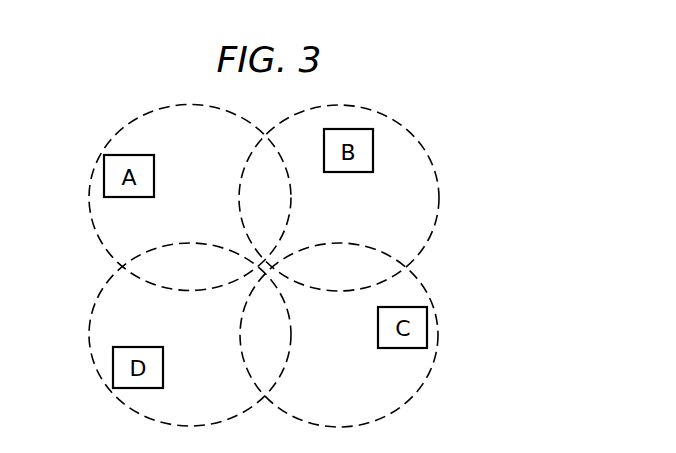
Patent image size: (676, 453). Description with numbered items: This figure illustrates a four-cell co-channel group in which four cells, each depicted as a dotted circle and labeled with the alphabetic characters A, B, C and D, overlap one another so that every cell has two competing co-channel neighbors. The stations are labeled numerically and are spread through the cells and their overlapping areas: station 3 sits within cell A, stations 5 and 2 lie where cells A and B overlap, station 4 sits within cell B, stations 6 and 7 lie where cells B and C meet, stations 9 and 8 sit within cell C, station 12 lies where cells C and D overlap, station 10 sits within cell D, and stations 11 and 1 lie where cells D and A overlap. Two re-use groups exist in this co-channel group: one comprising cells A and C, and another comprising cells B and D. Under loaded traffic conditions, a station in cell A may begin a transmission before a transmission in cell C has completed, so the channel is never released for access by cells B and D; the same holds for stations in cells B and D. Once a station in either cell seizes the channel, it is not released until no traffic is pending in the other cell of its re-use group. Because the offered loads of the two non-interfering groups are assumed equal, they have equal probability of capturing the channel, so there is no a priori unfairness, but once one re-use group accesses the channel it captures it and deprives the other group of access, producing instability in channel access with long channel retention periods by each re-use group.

The station 1 is at (223, 269).
The station 2 is at (262, 211).
The station 3 is at (192, 211).
The station 4 is at (336, 211).
The station 5 is at (272, 173).
The station 6 is at (312, 271).
The station 7 is at (356, 276).
The station 8 is at (358, 366).
The station 9 is at (333, 346).
The station 10 is at (187, 346).
The station 11 is at (163, 269).
The station 12 is at (262, 364).